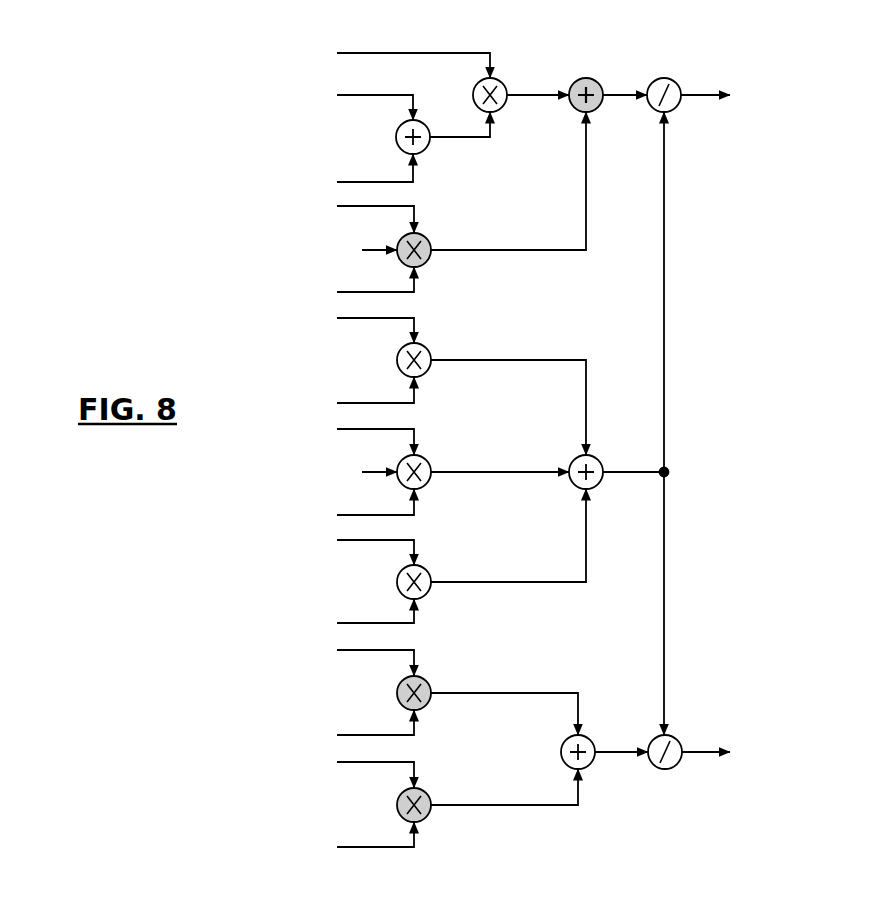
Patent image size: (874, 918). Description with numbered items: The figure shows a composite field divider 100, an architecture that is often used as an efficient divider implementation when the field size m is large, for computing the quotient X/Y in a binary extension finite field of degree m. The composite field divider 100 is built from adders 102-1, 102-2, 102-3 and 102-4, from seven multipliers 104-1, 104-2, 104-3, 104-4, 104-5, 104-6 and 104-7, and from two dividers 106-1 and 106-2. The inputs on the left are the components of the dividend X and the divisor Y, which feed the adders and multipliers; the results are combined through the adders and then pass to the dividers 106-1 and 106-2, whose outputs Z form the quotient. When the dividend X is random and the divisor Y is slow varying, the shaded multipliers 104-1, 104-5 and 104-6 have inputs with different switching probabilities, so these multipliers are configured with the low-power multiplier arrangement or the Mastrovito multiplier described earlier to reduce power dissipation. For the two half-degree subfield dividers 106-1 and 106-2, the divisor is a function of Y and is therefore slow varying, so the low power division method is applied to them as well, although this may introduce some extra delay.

The composite field divider 100 is at (793, 272).
The adder 102-1 is at (432, 147).
The adder 102-2 is at (587, 79).
The adder 102-3 is at (573, 458).
The adder 102-4 is at (563, 742).
The multiplier 104-1 is at (429, 237).
The multiplier 104-2 is at (429, 347).
The multiplier 104-3 is at (430, 461).
The multiplier 104-4 is at (431, 572).
The multiplier 104-5 is at (430, 681).
The multiplier 104-6 is at (429, 792).
The multiplier 104-7 is at (503, 81).
The divider 106-1 is at (665, 79).
The divider 106-2 is at (664, 771).